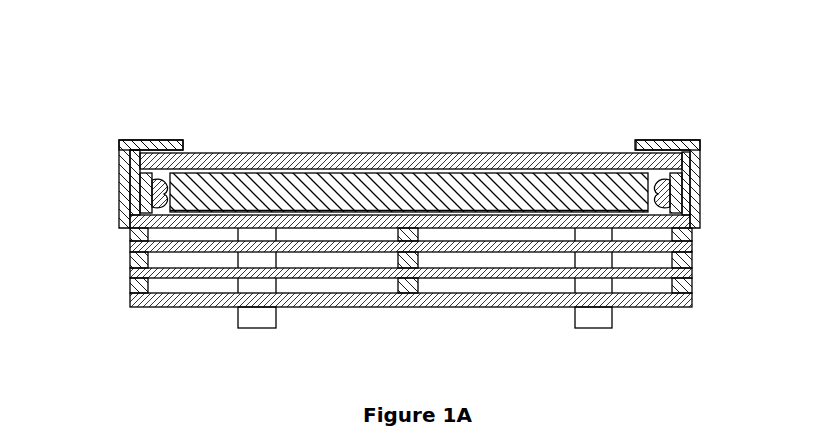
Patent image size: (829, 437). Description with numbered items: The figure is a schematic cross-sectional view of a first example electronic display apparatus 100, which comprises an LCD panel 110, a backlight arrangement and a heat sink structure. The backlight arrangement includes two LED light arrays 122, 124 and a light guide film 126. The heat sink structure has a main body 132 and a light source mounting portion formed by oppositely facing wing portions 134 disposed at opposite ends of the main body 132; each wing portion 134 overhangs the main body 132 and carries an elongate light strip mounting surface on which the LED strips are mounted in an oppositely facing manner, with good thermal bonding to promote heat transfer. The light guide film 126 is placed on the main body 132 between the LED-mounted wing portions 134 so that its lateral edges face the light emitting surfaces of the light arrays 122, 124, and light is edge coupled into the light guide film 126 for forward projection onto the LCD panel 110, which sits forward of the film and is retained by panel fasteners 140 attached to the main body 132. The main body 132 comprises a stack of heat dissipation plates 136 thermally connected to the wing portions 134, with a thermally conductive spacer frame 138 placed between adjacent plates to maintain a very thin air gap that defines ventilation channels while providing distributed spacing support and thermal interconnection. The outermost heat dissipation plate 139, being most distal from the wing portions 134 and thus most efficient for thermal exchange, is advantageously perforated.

The electronic display apparatus 100 is at (598, 87).
The LCD panel 110 is at (326, 162).
The LED light array 122 is at (150, 178).
The LED light array 124 is at (670, 195).
The light guide film 126 is at (233, 185).
The main body 132 is at (710, 233).
The wing portions 134 is at (132, 198).
The heat dissipation plates 136 is at (482, 222).
The spacer frame 138 is at (130, 232).
The outermost heat dissipation plate 139 is at (290, 302).
The panel fasteners 140 is at (123, 140).